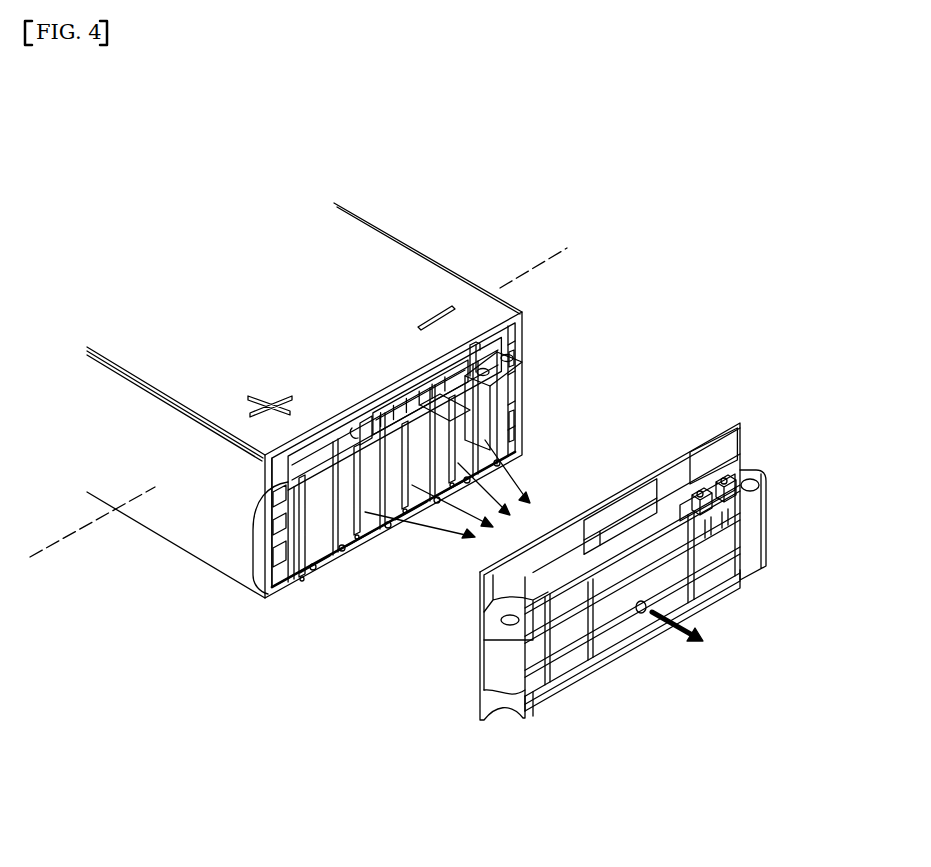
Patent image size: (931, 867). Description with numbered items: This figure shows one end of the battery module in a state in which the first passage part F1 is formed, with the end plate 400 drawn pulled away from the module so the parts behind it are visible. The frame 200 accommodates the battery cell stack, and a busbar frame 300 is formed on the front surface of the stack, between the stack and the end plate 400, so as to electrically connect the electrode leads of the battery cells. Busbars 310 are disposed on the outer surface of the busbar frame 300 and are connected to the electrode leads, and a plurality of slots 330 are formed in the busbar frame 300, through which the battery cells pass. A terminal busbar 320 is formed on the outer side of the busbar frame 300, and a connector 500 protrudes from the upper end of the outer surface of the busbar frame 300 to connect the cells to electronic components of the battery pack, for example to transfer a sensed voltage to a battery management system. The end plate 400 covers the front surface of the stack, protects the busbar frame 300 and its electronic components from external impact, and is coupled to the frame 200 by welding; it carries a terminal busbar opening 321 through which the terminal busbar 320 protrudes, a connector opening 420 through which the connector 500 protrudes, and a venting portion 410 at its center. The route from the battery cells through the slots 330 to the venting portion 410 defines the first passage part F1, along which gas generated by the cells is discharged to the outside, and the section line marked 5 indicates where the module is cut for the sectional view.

The frame 200 is at (278, 266).
The busbar frame 300 is at (264, 488).
The busbar 310 is at (350, 545).
The terminal busbar 320 is at (490, 368).
The terminal busbar opening 321 is at (690, 470).
The slot 330 is at (452, 487).
The end plate 400 is at (741, 398).
The venting portion 410 is at (648, 605).
The connector opening 420 is at (611, 508).
The connector 500 is at (392, 396).
The section line of FIG. 5 is at (37, 545).
The first passage part F1 is at (698, 642).